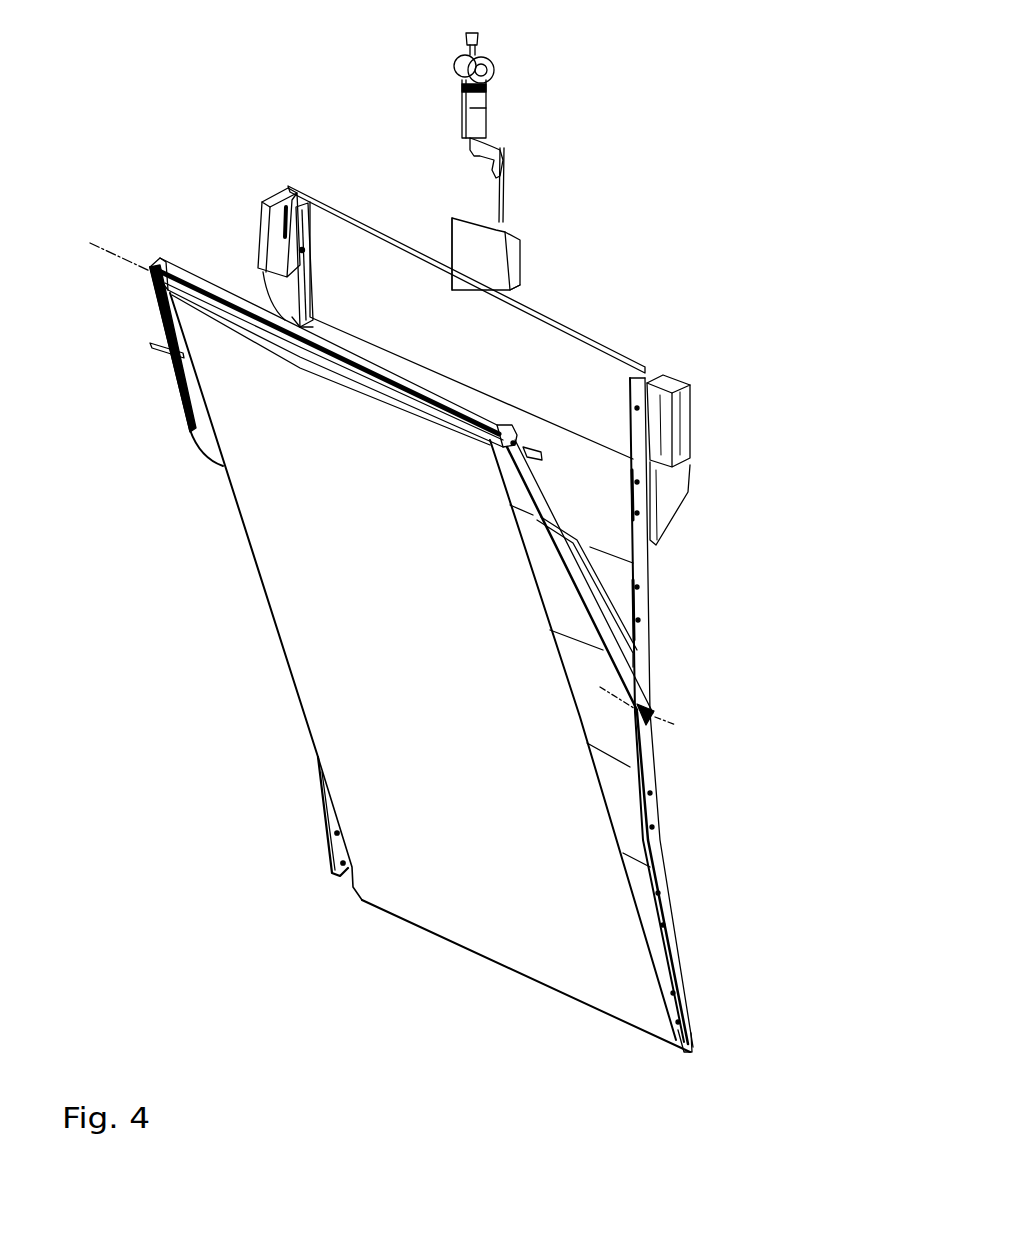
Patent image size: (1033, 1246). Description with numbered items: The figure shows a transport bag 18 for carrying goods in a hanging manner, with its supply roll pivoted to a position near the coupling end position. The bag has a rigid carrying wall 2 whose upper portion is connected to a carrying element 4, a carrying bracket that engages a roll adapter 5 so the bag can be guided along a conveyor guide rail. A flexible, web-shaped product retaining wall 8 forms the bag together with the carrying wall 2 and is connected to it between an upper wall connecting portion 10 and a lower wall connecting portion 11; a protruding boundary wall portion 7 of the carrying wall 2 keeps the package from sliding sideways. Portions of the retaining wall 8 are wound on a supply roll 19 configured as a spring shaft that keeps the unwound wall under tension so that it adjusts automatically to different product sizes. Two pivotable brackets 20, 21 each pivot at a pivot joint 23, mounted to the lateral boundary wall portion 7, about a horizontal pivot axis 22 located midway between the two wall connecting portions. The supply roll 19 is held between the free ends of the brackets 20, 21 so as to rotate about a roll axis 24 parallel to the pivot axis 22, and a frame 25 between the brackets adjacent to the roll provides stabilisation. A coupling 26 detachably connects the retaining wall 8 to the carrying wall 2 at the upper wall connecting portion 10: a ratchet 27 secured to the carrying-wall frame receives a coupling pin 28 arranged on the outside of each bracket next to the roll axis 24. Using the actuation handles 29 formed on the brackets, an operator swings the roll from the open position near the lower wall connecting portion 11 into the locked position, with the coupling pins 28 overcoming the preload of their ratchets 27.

The rigid carrying wall 2 is at (394, 252).
The carrying element 4 is at (502, 178).
The roll adapter 5 is at (480, 102).
The boundary wall portion 7 is at (663, 867).
The flexible product retaining wall 8 is at (290, 632).
The upper wall connecting portion 10 is at (621, 338).
The lower wall connecting portion 11 is at (706, 1040).
The transport bag 18 is at (671, 96).
The supply roll 19 is at (273, 345).
The pivotable bracket 20 is at (163, 310).
The pivotable bracket 21 is at (633, 677).
The pivot axis 22 is at (678, 726).
The pivot joint 23 is at (655, 715).
The roll axis 24 is at (143, 263).
The frame 25 is at (182, 262).
The coupling 26 is at (250, 230).
The ratchet 27 is at (683, 398).
The coupling pin 28 is at (537, 450).
The actuation handle 29 is at (185, 403).